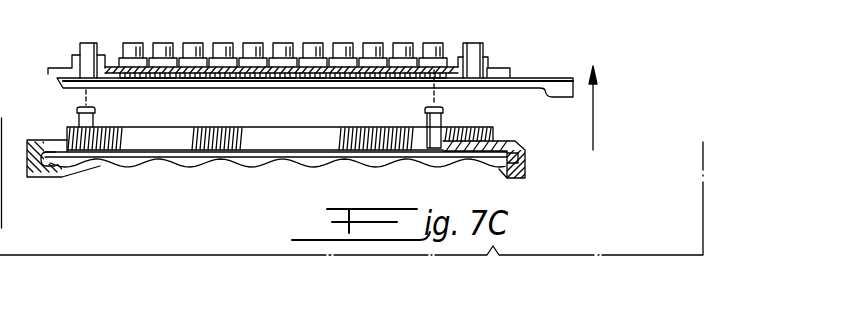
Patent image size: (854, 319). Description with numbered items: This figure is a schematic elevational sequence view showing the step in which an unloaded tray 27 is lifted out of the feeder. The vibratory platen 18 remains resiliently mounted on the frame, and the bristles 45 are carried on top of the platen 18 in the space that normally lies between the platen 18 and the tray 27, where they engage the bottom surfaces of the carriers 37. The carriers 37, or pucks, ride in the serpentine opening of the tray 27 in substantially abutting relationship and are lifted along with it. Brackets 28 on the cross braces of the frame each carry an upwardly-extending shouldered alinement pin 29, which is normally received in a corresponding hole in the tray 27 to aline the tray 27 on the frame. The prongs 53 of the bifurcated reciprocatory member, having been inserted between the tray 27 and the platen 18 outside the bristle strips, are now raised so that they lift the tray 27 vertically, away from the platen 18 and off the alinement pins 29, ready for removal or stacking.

The vibratory platen 18 is at (238, 155).
The tray 27 is at (517, 62).
The bracket 28 is at (27, 158).
The shouldered alinement pin 29 is at (78, 119).
The carrier 37 is at (262, 42).
The bristles 45 is at (257, 122).
The prong 53 is at (348, 84).